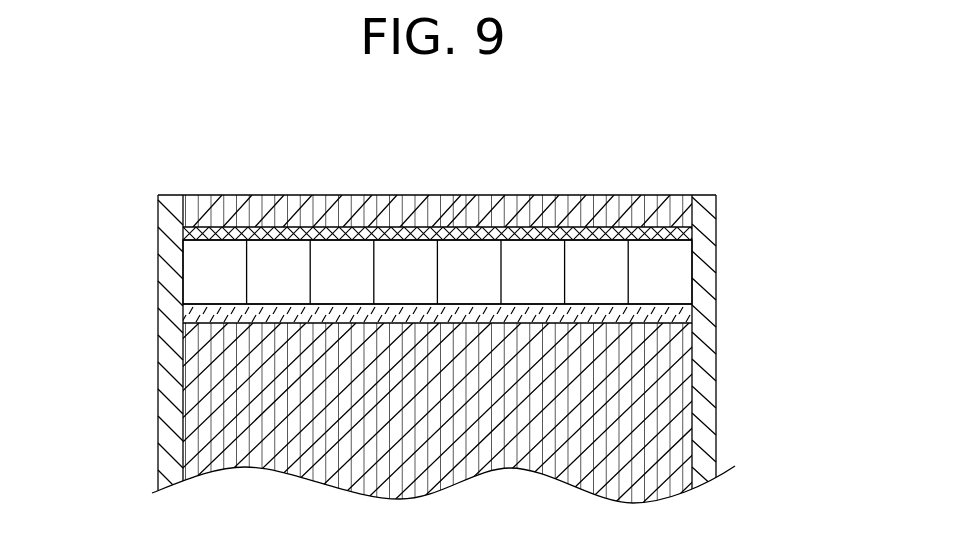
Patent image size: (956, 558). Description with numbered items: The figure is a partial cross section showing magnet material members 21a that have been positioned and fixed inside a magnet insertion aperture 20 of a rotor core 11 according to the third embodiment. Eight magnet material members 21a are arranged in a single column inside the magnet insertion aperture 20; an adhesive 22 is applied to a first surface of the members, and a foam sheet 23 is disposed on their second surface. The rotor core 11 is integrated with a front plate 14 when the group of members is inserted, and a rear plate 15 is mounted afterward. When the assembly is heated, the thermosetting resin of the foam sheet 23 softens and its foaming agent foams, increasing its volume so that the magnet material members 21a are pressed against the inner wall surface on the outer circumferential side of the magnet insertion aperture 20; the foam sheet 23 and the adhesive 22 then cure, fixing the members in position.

The rotor core 11 is at (240, 195).
The magnet insertion aperture 20 is at (601, 228).
The adhesive 22 is at (183, 238).
The magnet material member 21a is at (200, 265).
The foam sheet 23 is at (193, 314).
The front plate 14 is at (168, 365).
The rear plate 15 is at (707, 368).